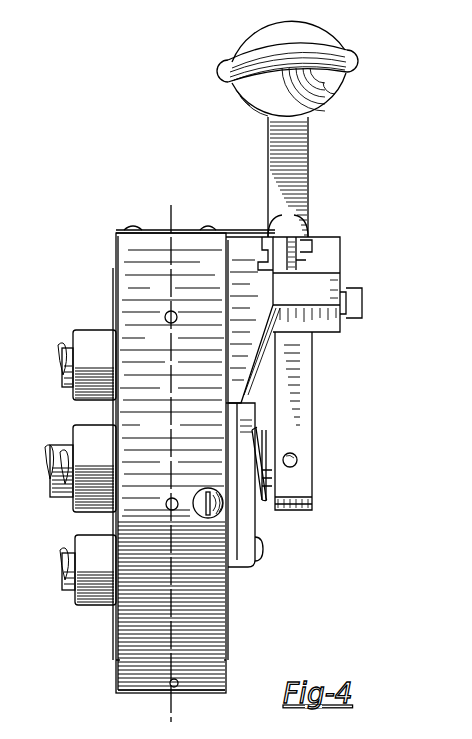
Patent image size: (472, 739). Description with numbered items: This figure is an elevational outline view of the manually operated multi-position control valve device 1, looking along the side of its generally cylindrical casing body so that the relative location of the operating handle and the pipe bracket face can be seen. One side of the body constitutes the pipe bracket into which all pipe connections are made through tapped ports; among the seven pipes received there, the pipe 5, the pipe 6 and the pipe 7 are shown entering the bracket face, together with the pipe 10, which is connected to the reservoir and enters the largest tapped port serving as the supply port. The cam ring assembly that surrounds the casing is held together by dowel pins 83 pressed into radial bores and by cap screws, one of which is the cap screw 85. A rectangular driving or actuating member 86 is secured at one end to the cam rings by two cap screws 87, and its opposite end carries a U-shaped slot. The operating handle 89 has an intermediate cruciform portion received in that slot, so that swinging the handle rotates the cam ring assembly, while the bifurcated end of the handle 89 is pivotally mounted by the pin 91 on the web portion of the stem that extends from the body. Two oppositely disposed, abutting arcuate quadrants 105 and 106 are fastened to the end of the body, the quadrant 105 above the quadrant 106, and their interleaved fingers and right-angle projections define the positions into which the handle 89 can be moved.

The control valve device 1 is at (110, 682).
The pipe 5 is at (60, 380).
The pipe 6 is at (160, 202).
The pipe 7 is at (62, 585).
The pipe 10 is at (55, 450).
The dowel pins 83 is at (165, 311).
The cap screw 85 is at (222, 508).
The driving or actuating member 86 is at (116, 236).
The cap screws 87 is at (128, 230).
The operating handle 89 is at (268, 149).
The pin 91 is at (298, 460).
The arcuate quadrant 105 is at (243, 255).
The arcuate quadrant 106 is at (326, 255).